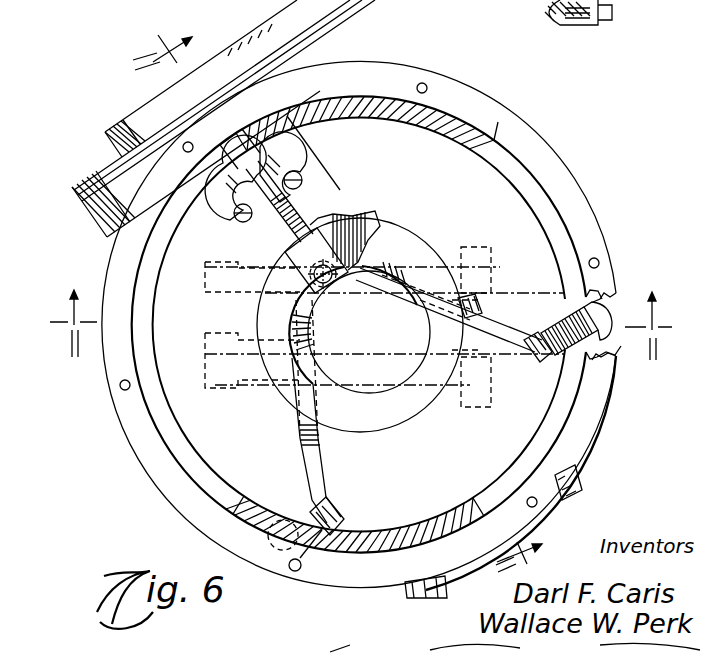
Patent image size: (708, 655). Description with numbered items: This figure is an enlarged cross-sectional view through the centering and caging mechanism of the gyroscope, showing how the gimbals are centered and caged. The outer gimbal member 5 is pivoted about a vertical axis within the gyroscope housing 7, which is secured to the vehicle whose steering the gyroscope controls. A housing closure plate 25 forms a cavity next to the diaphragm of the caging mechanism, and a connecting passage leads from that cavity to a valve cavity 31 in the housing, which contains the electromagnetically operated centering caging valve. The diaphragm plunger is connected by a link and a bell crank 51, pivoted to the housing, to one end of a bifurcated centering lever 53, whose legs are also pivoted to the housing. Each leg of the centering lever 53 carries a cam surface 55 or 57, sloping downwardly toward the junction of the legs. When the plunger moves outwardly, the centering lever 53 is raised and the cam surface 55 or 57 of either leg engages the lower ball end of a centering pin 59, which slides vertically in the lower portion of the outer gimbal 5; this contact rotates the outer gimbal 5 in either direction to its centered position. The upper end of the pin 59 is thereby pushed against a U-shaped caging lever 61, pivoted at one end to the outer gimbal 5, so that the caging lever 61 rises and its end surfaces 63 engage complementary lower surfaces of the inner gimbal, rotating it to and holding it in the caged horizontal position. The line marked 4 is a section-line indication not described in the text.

The section line 4- 4 is at (362, 325).
The outer gimbal member 5 is at (206, 341).
The gyroscope housing 7 is at (464, 128).
The housing closure plate 25 is at (125, 120).
The valve cavity 31 is at (541, 11).
The bell crank 51 is at (266, 196).
The bifurcated centering lever 53 is at (320, 478).
The cam surface 55 is at (383, 258).
The cam surface 57 is at (295, 323).
The centering pin 59 is at (323, 287).
The caging lever 61 is at (226, 282).
The surfaces 63 is at (479, 277).